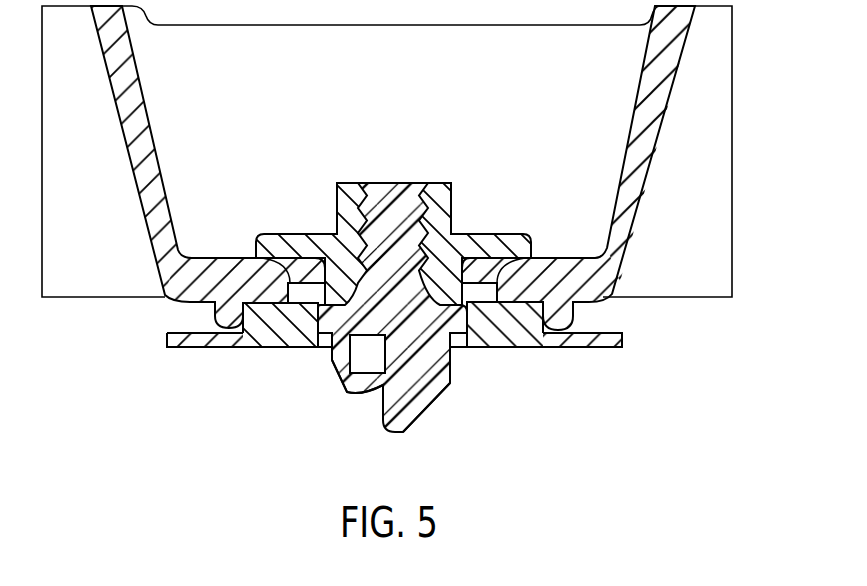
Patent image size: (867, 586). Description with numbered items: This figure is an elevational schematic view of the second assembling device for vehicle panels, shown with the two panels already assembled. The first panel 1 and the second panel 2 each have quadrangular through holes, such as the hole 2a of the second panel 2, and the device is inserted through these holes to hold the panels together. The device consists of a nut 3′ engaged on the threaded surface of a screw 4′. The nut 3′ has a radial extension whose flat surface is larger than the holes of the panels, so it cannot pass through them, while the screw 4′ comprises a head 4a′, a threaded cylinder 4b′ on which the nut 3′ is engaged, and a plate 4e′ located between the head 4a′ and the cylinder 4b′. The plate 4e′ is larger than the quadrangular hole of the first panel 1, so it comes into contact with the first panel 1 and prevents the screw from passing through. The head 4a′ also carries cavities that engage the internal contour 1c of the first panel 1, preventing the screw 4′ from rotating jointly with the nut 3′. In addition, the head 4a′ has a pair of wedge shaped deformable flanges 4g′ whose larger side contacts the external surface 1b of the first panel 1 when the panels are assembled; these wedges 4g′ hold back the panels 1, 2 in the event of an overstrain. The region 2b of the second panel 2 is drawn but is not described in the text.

The first panel 1 is at (162, 346).
The external surface of the first panel 1b is at (228, 347).
The internal contour of the first panel 1c is at (453, 348).
The second panel 2 is at (160, 292).
The through hole of the second panel 2a is at (487, 275).
The flat portion of housing 2b is at (570, 258).
The nut 3′ is at (440, 198).
The screw 4′ is at (431, 433).
The head of the screw 4a′ is at (428, 382).
The threaded cylinder of the screw 4b′ is at (395, 195).
The plate of the screw 4e′ is at (330, 318).
The wedge shaped deformable flanges 4g′ is at (333, 360).